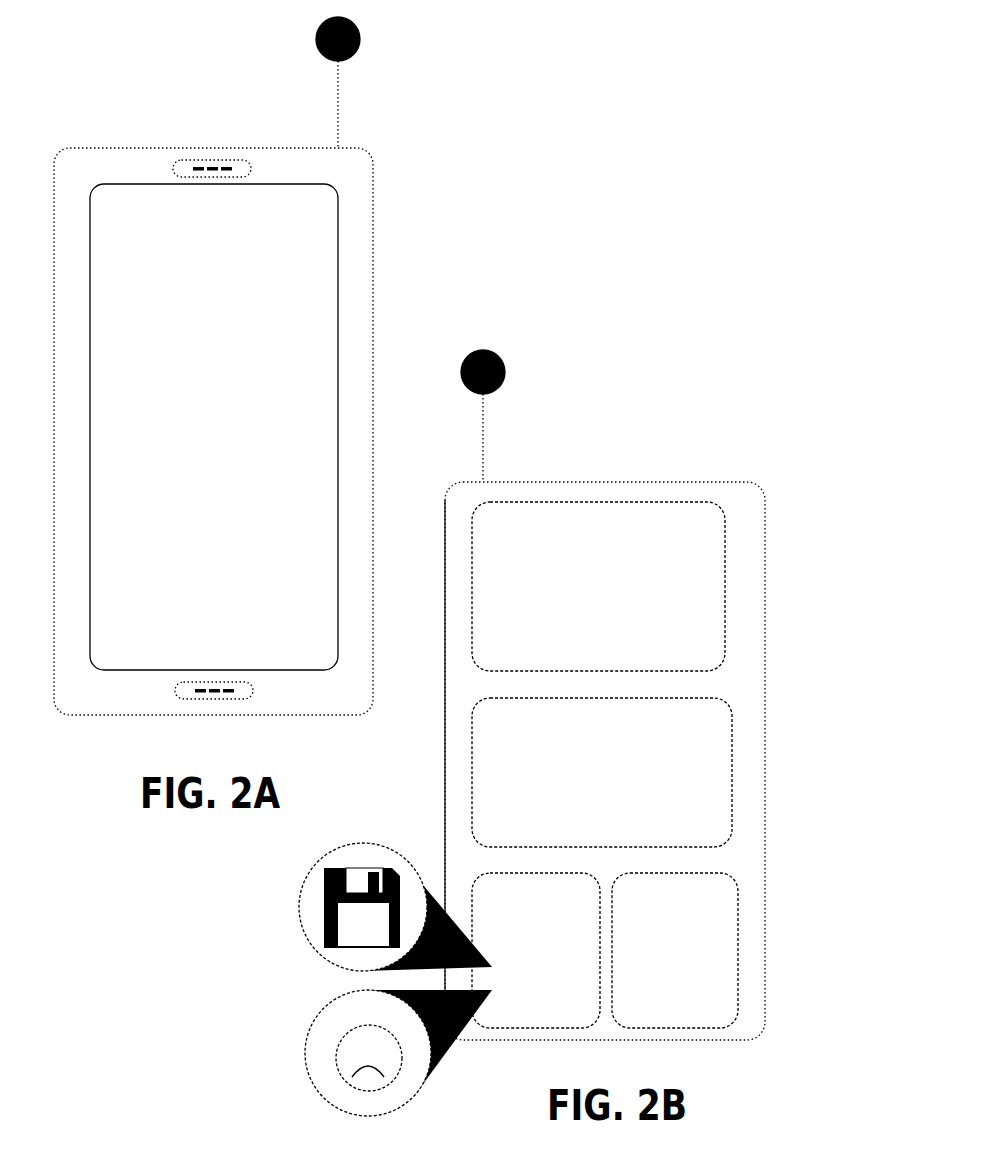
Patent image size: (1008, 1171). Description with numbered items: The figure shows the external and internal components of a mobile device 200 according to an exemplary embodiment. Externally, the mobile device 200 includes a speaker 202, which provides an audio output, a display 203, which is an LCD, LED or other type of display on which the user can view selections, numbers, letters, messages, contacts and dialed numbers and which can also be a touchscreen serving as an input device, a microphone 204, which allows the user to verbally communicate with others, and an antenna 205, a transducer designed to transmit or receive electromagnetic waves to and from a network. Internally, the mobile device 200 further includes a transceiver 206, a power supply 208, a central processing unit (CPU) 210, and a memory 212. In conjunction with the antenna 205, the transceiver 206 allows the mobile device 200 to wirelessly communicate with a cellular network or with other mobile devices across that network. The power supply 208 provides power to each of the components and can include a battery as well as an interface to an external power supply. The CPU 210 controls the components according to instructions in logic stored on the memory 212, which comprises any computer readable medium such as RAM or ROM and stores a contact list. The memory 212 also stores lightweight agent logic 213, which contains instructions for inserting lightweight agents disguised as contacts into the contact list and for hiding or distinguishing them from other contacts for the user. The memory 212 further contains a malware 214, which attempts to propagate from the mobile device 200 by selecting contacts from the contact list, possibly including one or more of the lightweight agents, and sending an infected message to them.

In FIG. 2A, the mobile device 200 is at (193, 98).
In FIG. 2B, the mobile device 200 is at (623, 398).
In FIG. 2A, the speaker 202 is at (205, 162).
In FIG. 2A, the display 203 is at (302, 404).
In FIG. 2A, the microphone 204 is at (156, 722).
In FIG. 2A, the antenna 205 is at (404, 82).
In FIG. 2B, the transceiver 206 is at (598, 549).
In FIG. 2B, the power supply 208 is at (475, 789).
In FIG. 2B, the central processing unit (CPU) 210 is at (724, 932).
In FIG. 2B, the memory 212 is at (455, 921).
In FIG. 2B, the lightweight agent logic 213 is at (326, 907).
In FIG. 2B, the malware 214 is at (336, 1053).